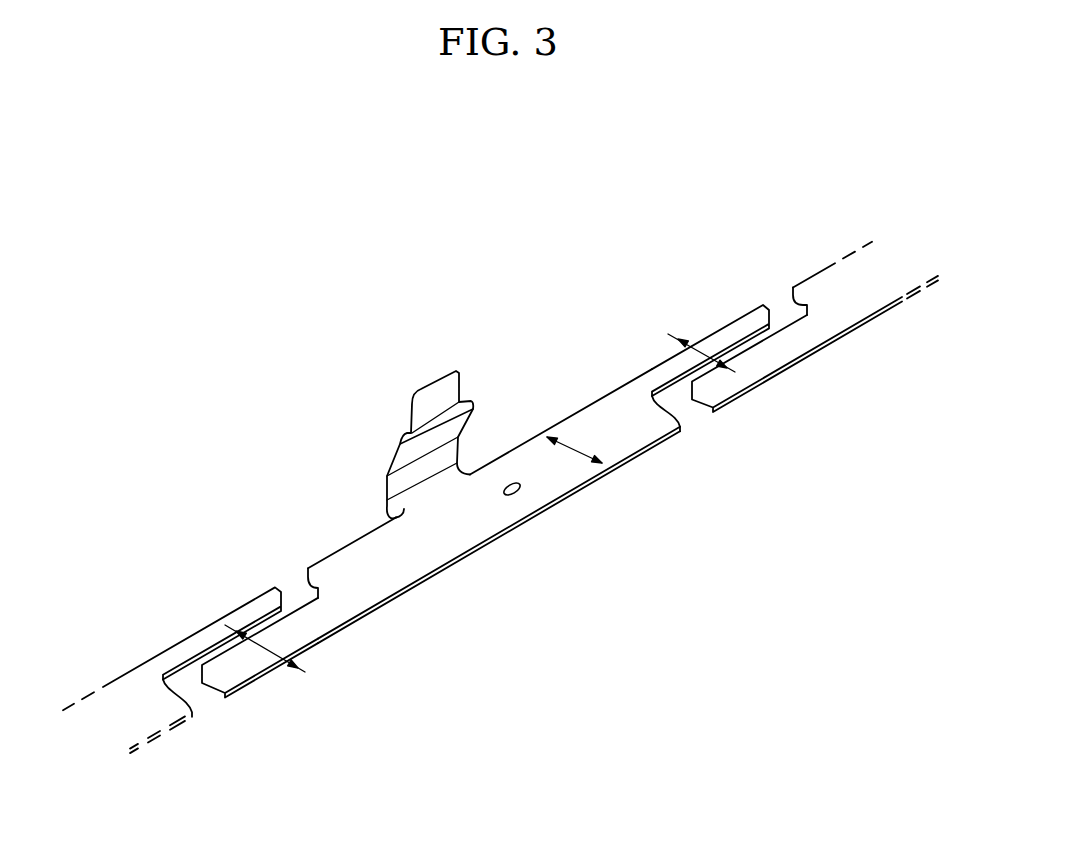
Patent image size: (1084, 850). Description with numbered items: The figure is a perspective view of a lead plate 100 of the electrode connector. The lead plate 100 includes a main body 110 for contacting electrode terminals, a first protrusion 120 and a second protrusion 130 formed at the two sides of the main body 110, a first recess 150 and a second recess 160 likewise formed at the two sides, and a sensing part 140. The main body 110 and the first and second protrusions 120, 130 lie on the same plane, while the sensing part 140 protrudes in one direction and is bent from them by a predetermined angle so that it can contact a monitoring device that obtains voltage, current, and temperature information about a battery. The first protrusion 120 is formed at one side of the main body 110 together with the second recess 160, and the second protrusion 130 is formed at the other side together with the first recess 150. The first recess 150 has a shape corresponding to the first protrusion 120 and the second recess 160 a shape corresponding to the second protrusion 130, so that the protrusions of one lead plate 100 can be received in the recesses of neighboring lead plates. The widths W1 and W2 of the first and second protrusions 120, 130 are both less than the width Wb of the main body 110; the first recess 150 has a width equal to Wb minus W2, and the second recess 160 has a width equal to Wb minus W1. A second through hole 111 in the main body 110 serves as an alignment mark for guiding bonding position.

The lead plate 100 is at (230, 243).
The main body 110 is at (447, 537).
The second through hole 111 is at (517, 482).
The first protrusion 120 is at (230, 678).
The second protrusion 130 is at (200, 637).
The sensing part 140 is at (437, 399).
The first recess 150 is at (205, 698).
The second recess 160 is at (304, 595).
The width of the first protrusion W1 is at (270, 653).
The width of the second protrusion W2 is at (705, 352).
The width of the main body Wb is at (579, 445).